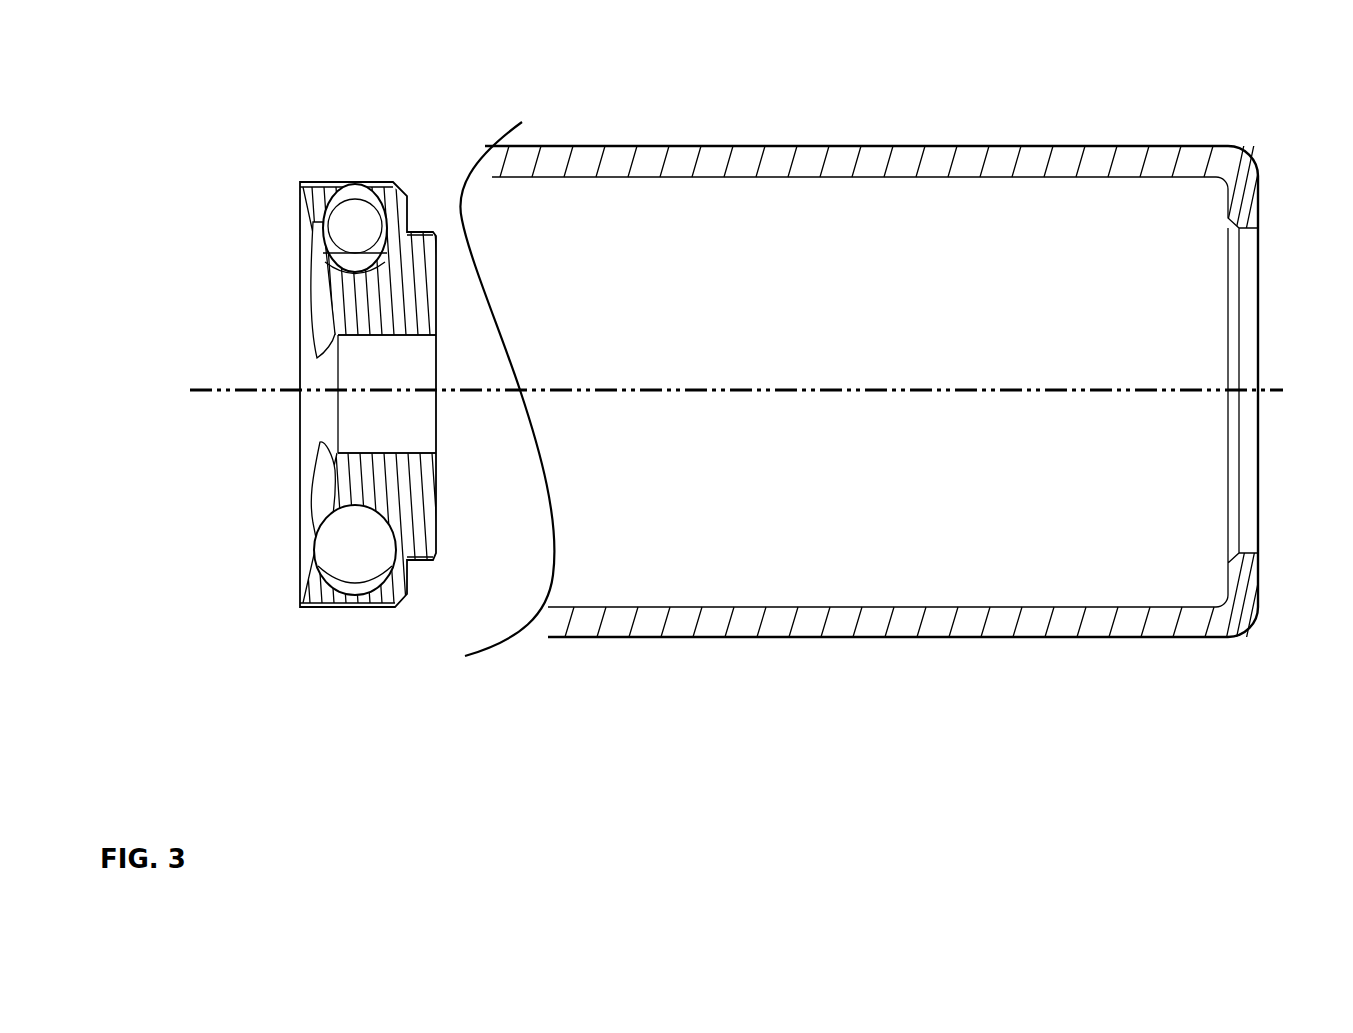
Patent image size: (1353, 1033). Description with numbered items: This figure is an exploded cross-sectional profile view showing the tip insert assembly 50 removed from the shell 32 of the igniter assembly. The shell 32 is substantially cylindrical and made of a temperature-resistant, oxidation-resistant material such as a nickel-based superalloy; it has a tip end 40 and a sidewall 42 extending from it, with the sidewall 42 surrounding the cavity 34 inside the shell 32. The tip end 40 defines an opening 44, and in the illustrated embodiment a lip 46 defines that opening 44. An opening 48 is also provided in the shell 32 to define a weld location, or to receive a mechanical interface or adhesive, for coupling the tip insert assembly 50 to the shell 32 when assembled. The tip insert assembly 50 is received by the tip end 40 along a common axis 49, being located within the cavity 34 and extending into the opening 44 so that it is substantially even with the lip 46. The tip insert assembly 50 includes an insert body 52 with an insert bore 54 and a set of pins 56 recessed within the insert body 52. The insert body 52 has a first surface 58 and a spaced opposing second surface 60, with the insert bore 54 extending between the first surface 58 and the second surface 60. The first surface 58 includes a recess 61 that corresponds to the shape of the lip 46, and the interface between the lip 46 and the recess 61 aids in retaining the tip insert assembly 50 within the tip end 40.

The shell 32 is at (875, 367).
The cavity 34 is at (680, 278).
The tip end 40 is at (910, 367).
The sidewall 42 is at (875, 367).
The opening 44 is at (1253, 318).
The lip 46 is at (1245, 578).
The opening 48 is at (1160, 160).
The common axis 49 is at (1116, 392).
The tip insert assembly 50 is at (355, 182).
The insert body 52 is at (313, 377).
The insert bore 54 is at (360, 453).
The pins 56 is at (360, 553).
The first surface 58 is at (329, 377).
The second surface 60 is at (322, 568).
The recess 61 is at (313, 377).